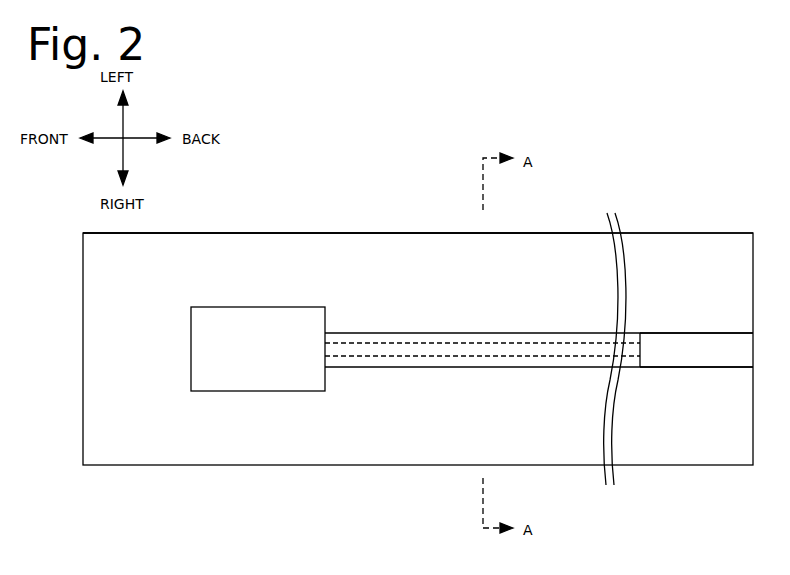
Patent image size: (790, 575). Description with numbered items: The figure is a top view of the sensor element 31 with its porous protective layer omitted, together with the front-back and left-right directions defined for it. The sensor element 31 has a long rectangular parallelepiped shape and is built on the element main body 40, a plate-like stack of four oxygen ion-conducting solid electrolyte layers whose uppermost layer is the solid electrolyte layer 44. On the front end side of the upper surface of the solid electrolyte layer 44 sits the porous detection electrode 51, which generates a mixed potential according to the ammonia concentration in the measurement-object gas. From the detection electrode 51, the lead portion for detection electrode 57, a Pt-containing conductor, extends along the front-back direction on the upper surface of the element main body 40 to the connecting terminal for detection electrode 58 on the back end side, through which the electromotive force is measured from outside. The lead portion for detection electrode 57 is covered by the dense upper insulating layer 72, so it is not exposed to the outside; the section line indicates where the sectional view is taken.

The sensor element 31 is at (603, 106).
The element main body 40 is at (578, 165).
The solid electrolyte layer 44 is at (577, 255).
The detection electrode 51 is at (256, 307).
The lead portion for detection electrode 57 is at (376, 343).
The connecting terminal for detection electrode 58 is at (702, 333).
The upper insulating layer 72 is at (416, 333).